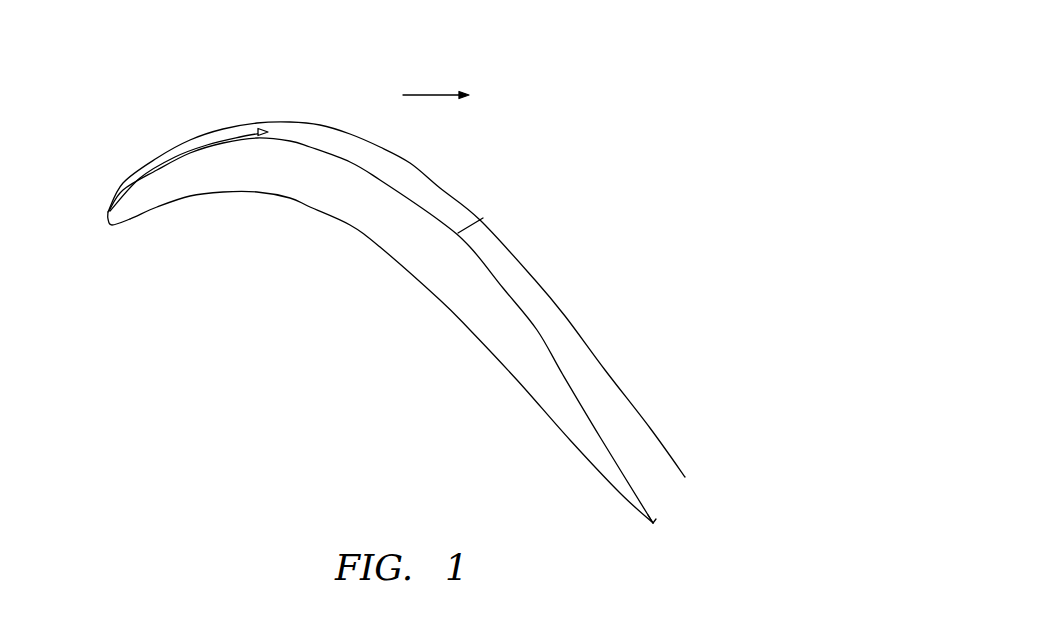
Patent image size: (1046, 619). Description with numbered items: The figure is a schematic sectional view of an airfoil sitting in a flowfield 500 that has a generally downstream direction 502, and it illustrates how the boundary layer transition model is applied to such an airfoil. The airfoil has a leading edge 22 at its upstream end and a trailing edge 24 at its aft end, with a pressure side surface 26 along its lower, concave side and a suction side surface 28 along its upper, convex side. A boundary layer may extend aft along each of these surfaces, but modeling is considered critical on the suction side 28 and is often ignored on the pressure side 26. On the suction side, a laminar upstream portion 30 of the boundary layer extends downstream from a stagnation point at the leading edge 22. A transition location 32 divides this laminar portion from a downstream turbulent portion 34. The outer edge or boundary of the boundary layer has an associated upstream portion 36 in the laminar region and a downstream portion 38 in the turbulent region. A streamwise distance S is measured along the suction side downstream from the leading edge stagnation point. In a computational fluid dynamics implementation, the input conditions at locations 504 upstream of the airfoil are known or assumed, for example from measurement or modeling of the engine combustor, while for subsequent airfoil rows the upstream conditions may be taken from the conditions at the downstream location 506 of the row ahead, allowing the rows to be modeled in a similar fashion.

The leading edge 22 is at (110, 227).
The trailing edge 24 is at (655, 526).
The pressure side surface 26 is at (393, 259).
The suction side surface 28 is at (503, 289).
The laminar upstream portion 30 is at (346, 145).
The transition location 32 is at (481, 221).
The downstream turbulent portion 34 is at (559, 322).
The upstream portion of boundary layer edge 36 is at (422, 170).
The downstream portion of boundary layer edge 38 is at (598, 355).
The streamwise distance S is at (190, 149).
The flowfield 500 is at (280, 105).
The downstream direction 502 is at (433, 93).
The upstream locations 504 is at (62, 162).
The downstream location 506 is at (663, 253).